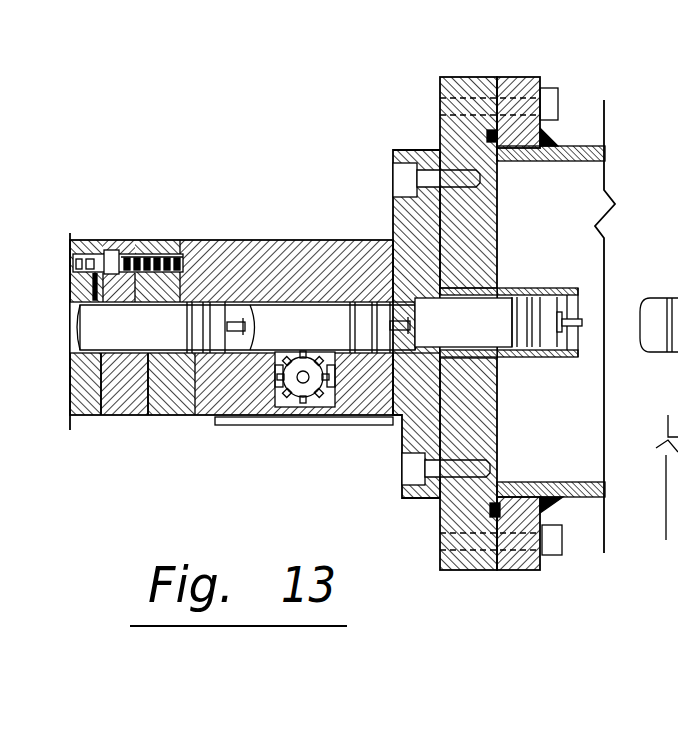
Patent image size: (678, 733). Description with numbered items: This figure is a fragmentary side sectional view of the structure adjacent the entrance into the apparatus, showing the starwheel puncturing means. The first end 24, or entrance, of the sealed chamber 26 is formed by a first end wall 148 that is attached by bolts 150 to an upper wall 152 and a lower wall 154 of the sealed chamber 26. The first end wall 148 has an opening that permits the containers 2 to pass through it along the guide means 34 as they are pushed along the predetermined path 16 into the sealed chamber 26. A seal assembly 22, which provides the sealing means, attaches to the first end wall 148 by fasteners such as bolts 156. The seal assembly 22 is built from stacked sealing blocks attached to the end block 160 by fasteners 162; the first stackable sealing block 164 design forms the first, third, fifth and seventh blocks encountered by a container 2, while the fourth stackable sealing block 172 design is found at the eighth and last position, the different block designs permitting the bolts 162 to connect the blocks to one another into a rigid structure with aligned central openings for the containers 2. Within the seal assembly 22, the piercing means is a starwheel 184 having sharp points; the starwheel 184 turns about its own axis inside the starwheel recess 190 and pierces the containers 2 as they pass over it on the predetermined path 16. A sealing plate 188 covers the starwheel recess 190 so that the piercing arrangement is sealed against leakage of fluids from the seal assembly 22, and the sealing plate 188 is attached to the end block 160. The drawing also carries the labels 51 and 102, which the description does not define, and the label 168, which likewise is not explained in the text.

The seal assembly 22 is at (95, 178).
The first end 24 is at (419, 98).
The sealed chamber 26 is at (474, 590).
The predetermined path 16 is at (523, 376).
The container 2 is at (575, 305).
The guide means 34 is at (517, 288).
The shaft portion 51 is at (321, 357).
The bearing assembly 102 is at (290, 452).
The first end wall 148 is at (462, 83).
The bolt 150 is at (549, 100).
The upper wall 152 is at (582, 143).
The lower wall 154 is at (601, 480).
The bolt 156 is at (404, 177).
The end block 160 is at (357, 240).
The fastener 162 is at (123, 240).
The first stackable sealing block 164 is at (130, 415).
The shaft 168 is at (241, 302).
The fourth stackable sealing block 172 is at (173, 241).
The starwheel 184 is at (299, 408).
The sealing plate 188 is at (223, 423).
The starwheel recess 190 is at (292, 408).